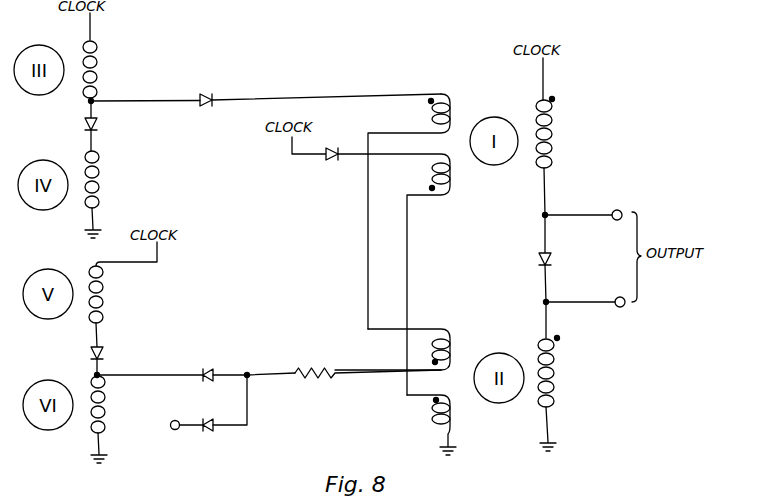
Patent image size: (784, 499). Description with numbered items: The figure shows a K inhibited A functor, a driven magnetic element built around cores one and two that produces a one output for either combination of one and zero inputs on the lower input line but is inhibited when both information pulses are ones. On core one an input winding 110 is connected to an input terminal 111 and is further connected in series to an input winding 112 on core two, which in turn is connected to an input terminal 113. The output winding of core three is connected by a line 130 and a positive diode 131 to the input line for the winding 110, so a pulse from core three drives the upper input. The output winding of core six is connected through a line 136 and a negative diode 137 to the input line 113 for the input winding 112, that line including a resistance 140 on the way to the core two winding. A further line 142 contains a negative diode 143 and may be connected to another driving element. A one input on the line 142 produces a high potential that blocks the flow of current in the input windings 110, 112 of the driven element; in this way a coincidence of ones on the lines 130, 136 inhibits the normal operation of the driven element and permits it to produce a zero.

The input winding 110 is at (452, 109).
The input terminal 111 is at (372, 91).
The input winding 112 is at (452, 345).
The input terminal 113 is at (268, 377).
The line 130 is at (171, 95).
The positive diode 131 is at (205, 92).
The line 136 is at (172, 371).
The negative diode 137 is at (213, 345).
The resistance 140 is at (320, 346).
The line 142 is at (251, 416).
The negative diode 143 is at (208, 433).